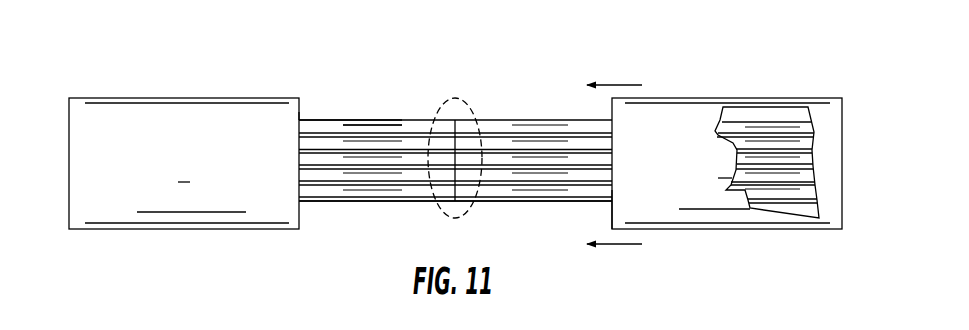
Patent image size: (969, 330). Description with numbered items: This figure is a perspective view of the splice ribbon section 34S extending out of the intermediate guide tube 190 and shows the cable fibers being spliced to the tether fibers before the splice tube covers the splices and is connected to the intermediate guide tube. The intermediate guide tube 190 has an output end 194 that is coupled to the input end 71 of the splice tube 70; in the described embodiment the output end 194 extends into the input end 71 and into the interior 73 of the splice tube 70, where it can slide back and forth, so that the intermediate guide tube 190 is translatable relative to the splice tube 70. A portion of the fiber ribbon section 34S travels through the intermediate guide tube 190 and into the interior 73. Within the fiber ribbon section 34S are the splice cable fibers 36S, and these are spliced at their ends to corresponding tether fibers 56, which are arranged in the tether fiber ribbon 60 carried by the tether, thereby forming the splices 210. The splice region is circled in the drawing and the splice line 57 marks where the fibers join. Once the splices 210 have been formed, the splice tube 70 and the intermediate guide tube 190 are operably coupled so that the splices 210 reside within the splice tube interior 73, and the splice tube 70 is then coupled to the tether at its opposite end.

The intermediate guide tube 190 is at (176, 98).
The output end 194 is at (305, 108).
The fiber ribbon section 34S is at (351, 108).
The splice cable fibers 36S is at (385, 127).
The splice 57 is at (445, 118).
The splices 210 is at (458, 98).
The tether fiber 56 is at (493, 120).
The tether fiber ribbon 60 is at (516, 204).
The splice tube 70 is at (682, 98).
The input end 71 is at (610, 213).
The interior 73 is at (800, 207).